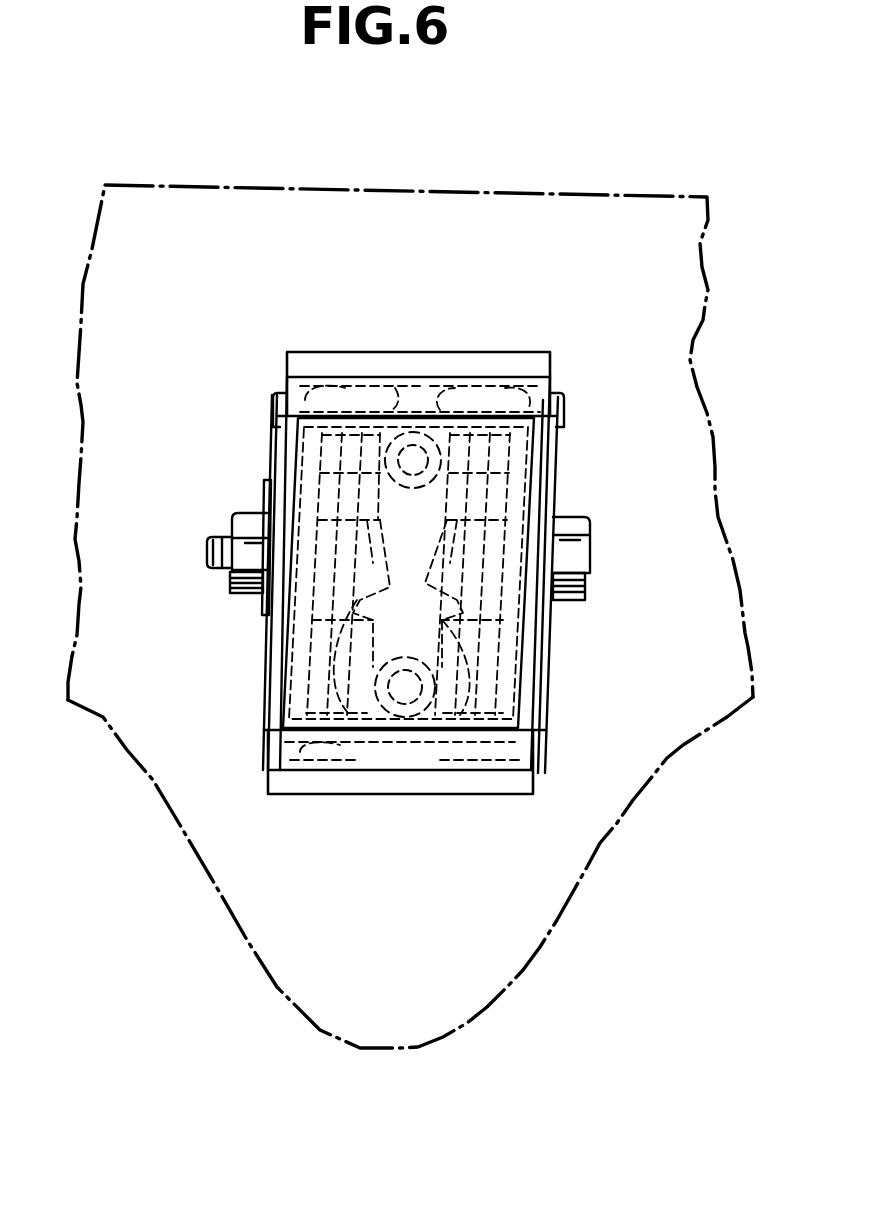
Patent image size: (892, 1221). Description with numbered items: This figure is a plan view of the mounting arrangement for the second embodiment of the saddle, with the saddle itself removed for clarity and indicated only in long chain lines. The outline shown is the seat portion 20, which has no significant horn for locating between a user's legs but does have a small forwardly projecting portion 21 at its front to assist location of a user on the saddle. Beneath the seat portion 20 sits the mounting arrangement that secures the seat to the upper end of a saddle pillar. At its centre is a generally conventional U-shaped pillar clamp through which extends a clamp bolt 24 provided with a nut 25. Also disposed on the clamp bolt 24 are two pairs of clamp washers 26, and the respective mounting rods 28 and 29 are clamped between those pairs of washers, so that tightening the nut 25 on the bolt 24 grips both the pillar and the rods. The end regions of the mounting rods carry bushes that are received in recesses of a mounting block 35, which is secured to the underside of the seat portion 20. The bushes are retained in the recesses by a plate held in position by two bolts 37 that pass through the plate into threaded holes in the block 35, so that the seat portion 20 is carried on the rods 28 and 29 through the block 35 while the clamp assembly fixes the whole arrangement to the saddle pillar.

The seat portion 20 is at (262, 208).
The forwardly projecting portion 21 is at (293, 946).
The clamp bolt 24 is at (225, 543).
The nut 25 is at (248, 515).
The clamp washers 26 is at (262, 618).
The mounting rod 28 is at (555, 397).
The mounting rod 29 is at (273, 410).
The mounting block 35 is at (447, 362).
The bolts 37 is at (394, 812).